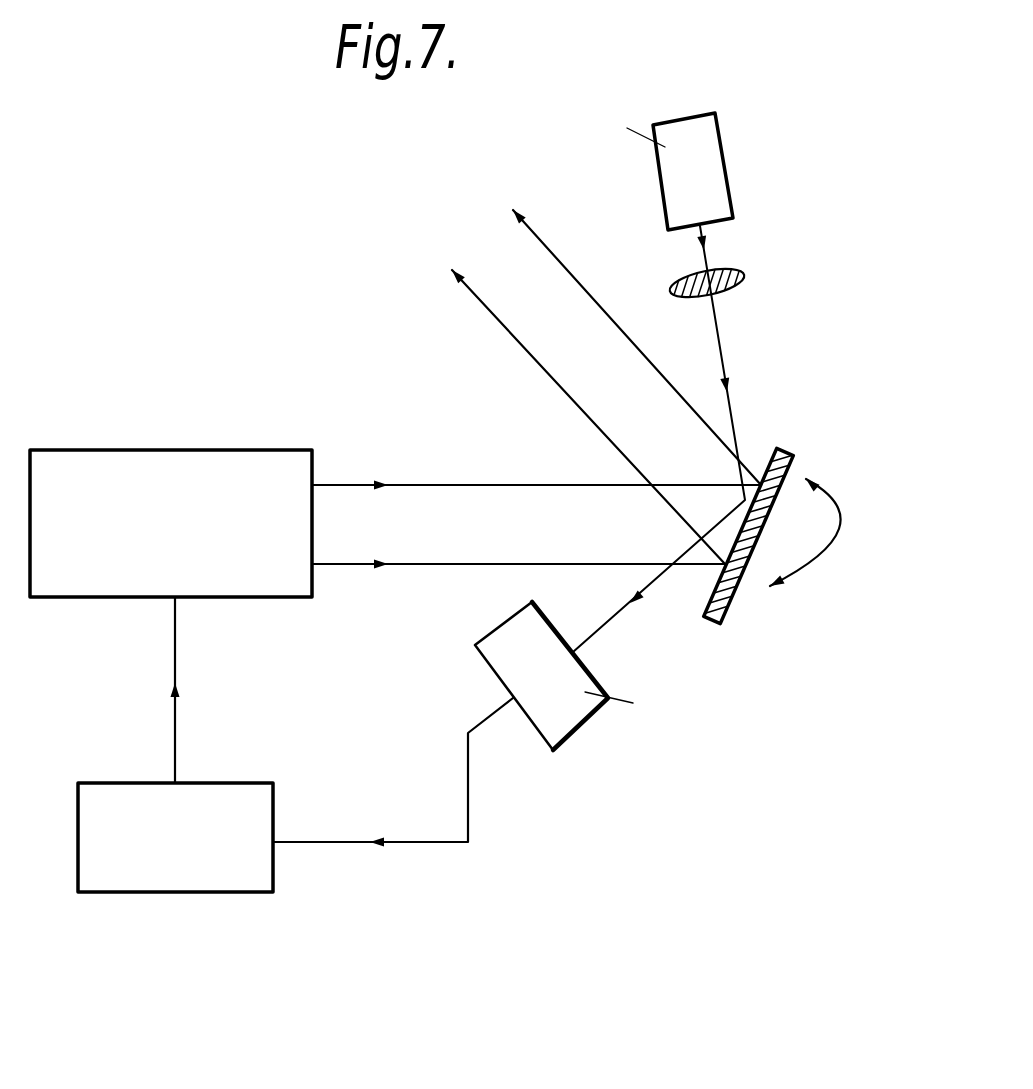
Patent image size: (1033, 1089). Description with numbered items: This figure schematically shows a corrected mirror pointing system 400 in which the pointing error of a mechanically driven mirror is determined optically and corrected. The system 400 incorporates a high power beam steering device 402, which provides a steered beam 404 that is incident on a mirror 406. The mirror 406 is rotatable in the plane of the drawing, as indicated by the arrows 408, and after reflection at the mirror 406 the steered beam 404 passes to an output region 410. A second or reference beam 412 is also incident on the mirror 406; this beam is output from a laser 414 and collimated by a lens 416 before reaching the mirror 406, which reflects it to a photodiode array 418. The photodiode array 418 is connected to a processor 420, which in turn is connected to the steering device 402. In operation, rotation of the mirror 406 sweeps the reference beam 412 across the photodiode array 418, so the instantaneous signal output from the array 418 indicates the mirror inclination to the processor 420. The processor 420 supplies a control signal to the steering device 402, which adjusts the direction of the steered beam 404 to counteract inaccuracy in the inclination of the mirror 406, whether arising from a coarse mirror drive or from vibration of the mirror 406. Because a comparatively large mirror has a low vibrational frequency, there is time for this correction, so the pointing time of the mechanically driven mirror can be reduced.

The corrected mirror pointing system 400 is at (583, 838).
The high power beam steering device 402 is at (183, 450).
The steered beam 404 is at (427, 485).
The mirror 406 is at (722, 618).
The arrows 408 is at (837, 530).
The output region 410 is at (433, 239).
The reference beam 412 is at (722, 360).
The laser 414 is at (727, 170).
The lens 416 is at (745, 275).
The photodiode array 418 is at (578, 726).
The processor 420 is at (273, 885).